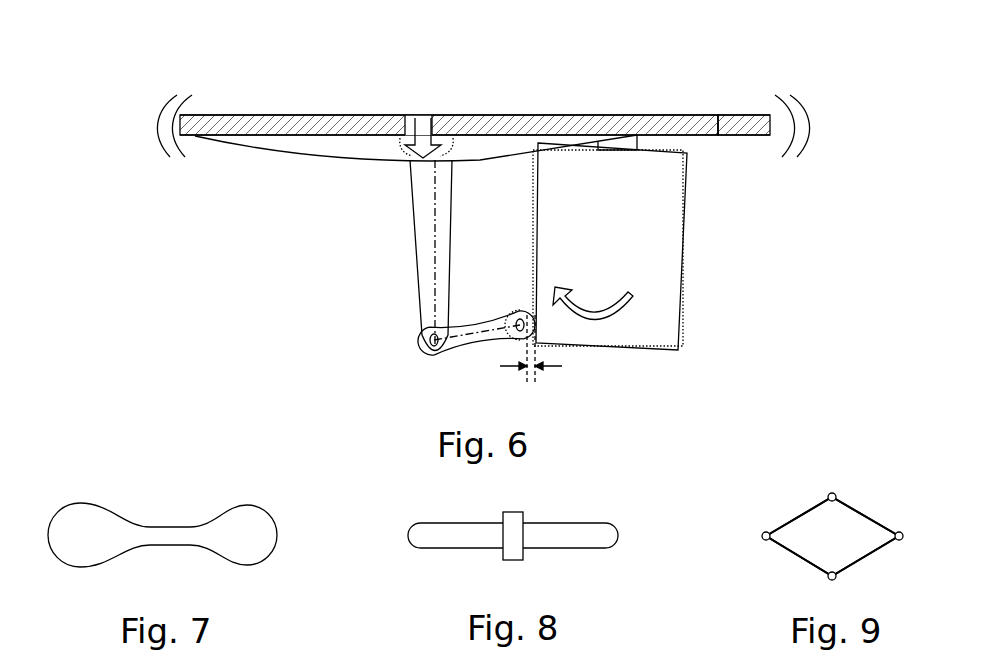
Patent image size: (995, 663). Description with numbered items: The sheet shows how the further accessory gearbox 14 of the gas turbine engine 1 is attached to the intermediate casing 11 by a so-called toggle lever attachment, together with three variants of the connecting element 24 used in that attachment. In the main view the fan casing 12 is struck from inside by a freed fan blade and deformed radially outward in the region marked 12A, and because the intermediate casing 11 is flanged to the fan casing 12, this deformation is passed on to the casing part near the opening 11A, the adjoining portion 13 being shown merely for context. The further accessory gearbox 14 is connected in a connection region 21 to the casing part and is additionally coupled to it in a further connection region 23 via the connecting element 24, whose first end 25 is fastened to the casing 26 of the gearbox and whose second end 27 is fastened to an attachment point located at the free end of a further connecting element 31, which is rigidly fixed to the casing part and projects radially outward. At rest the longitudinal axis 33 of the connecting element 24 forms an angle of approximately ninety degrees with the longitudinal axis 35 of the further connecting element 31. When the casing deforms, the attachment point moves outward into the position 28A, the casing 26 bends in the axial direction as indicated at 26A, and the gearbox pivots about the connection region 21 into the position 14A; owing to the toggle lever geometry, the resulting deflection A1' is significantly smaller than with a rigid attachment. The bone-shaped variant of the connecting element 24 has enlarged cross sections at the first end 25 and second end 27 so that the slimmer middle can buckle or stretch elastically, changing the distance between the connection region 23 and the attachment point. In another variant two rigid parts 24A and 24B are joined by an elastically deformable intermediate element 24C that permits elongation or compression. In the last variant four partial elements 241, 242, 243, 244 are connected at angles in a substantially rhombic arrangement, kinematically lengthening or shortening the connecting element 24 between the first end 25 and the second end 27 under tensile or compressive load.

In FIG. 6, the gas turbine engine 1 is at (146, 70).
In FIG. 6, the intermediate casing 11 is at (492, 116).
In FIG. 6, the opening of plate 11A is at (485, 160).
In FIG. 6, the fan casing 12 is at (212, 115).
In FIG. 6, the deformed region of fan casing 12A is at (225, 140).
In FIG. 6, the plate end portion 13 is at (742, 116).
In FIG. 6, the further accessory gearbox 14 is at (688, 310).
In FIG. 6, the deflected position of further accessory gearbox 14A is at (668, 354).
In FIG. 6, the connection region 21 is at (612, 137).
In FIG. 6, the further connection region 23 is at (512, 300).
In FIG. 6, the connecting element 24 is at (462, 349).
In FIG. 7, the connecting element 24 is at (168, 525).
In FIG. 8, the connecting element 24 is at (543, 520).
In FIG. 9, the connecting element 24 is at (800, 566).
In FIG. 8, the rigid part 24A is at (418, 548).
In FIG. 8, the rigid part 24B is at (575, 548).
In FIG. 8, the elastically deformable intermediate element 24C is at (513, 548).
In FIG. 6, the first end 25 is at (520, 339).
In FIG. 7, the first end 25 is at (245, 505).
In FIG. 8, the first end 25 is at (618, 535).
In FIG. 9, the first end 25 is at (903, 536).
In FIG. 6, the casing 26 is at (683, 333).
In FIG. 6, the deformation of casing 26A is at (688, 154).
In FIG. 6, the second end 27 is at (420, 335).
In FIG. 7, the second end 27 is at (90, 505).
In FIG. 8, the second end 27 is at (408, 535).
In FIG. 9, the second end 27 is at (762, 536).
In FIG. 6, the deflected position of attachment point 28A is at (432, 356).
In FIG. 6, the further connecting element 31 is at (410, 280).
In FIG. 6, the longitudinal axis of connecting element 33 is at (490, 322).
In FIG. 6, the longitudinal axis of further connecting element 35 is at (434, 218).
In FIG. 9, the partial element 241 is at (865, 515).
In FIG. 9, the partial element 242 is at (800, 515).
In FIG. 9, the partial element 243 is at (790, 552).
In FIG. 9, the partial element 244 is at (870, 553).
In FIG. 6, the deflection of accessory gearbox A1' is at (536, 373).